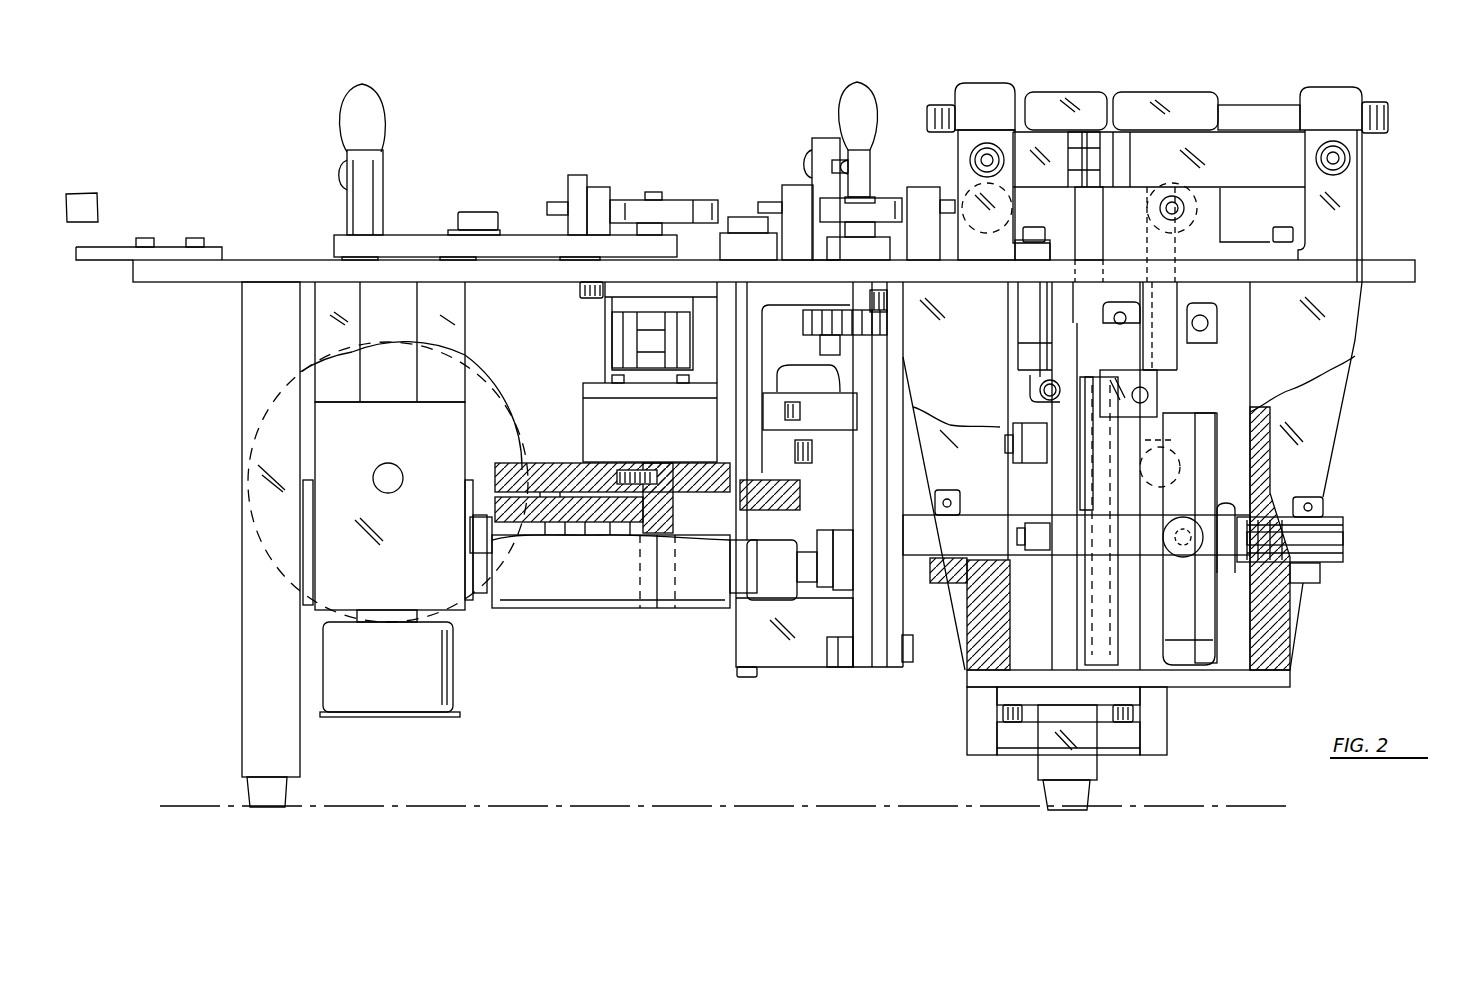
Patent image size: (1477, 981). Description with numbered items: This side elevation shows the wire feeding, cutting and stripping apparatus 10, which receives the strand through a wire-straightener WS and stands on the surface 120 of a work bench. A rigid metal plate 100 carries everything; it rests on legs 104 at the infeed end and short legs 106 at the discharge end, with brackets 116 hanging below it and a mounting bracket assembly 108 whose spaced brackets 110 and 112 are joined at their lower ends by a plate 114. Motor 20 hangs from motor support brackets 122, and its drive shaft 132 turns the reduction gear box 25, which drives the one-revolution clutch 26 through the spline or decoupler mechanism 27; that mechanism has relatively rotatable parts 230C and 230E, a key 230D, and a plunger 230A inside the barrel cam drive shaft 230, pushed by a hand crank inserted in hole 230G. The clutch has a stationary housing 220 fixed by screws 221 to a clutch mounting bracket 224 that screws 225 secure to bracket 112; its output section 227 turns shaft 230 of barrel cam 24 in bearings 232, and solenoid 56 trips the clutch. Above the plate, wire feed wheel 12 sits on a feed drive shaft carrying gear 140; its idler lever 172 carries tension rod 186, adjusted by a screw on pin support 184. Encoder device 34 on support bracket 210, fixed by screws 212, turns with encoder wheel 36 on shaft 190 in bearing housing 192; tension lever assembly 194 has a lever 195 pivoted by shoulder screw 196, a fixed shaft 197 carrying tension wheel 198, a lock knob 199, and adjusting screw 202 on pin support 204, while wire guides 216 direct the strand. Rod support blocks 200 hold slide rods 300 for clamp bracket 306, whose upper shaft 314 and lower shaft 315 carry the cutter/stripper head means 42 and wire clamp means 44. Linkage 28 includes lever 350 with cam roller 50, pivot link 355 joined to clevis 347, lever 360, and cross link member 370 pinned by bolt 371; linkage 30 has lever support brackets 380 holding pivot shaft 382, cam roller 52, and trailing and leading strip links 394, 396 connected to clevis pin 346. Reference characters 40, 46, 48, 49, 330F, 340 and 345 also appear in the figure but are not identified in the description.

The apparatus 10 is at (218, 140).
The wire-straightener WS is at (98, 200).
The rigid metal plate 100 is at (272, 260).
The legs 104 is at (242, 727).
The short legs 106 is at (1097, 774).
The mounting bracket assembly 108 is at (1300, 640).
The bracket 110 is at (1333, 443).
The bracket 112 is at (950, 616).
The plate 114 is at (1290, 680).
The brackets 116 is at (967, 748).
The surface 120 is at (700, 806).
The motor support brackets 122 is at (466, 310).
The wire feed wheel 12 is at (881, 198).
The drive shaft 132 is at (400, 475).
The gear 140 is at (803, 322).
The lever 172 is at (721, 245).
The pin support 184 is at (820, 138).
The tension rod 186 is at (850, 84).
The drive shaft 190 is at (653, 192).
The bearing housing 192 is at (675, 330).
The tension lever assembly 194 is at (425, 235).
The lever 195 is at (398, 235).
The shoulder screw 196 is at (480, 212).
The fixed shaft 197 is at (662, 228).
The tension wheel 198 is at (668, 200).
The lever lock knob 199 is at (575, 175).
The motor 20 is at (476, 376).
The rod support blocks 200 is at (1358, 210).
The adjusting screw 202 is at (340, 168).
The pin support 204 is at (340, 194).
The support bracket 210 is at (605, 315).
The screws 212 is at (688, 383).
The wire guides 216 is at (598, 187).
The stationary housing 220 is at (865, 667).
The screws 221 is at (913, 650).
The clutch mounting bracket 224 is at (900, 672).
The screws 225 is at (868, 298).
The output section 227 is at (935, 558).
The drive shaft 230 is at (1343, 518).
The plunger 230A is at (1343, 540).
The rotatable part 230C is at (612, 608).
The key 230D is at (658, 608).
The rotatable part 230E is at (715, 608).
The hole 230G is at (1343, 528).
The bearings 232 is at (1300, 583).
The barrel cam 24 is at (1200, 687).
The reduction gear box 25 is at (472, 553).
The one-revolution clutch mechanism 26 is at (795, 600).
The spline mechanism 27 is at (540, 622).
The linkage 28 is at (1045, 478).
The linkage 30 is at (1178, 362).
The slide rods 300 is at (985, 155).
The clamp bracket 306 is at (1247, 105).
The upper shaft 314 is at (1287, 105).
The lower shaft 315 is at (1258, 230).
The bearing housing 330F is at (602, 465).
The encoder device 34 is at (583, 403).
The pivot pin 340 is at (1200, 206).
The lug 345 is at (1220, 305).
The clevis pin 346 is at (1222, 320).
The clevis 347 is at (1125, 146).
The vertical lever 350 is at (1103, 248).
The pivot link 355 is at (1100, 172).
The measuring wheel 36 is at (705, 200).
The vertical lever 360 is at (1050, 597).
The cross link member 370 is at (1020, 428).
The pivot pin 371 is at (1022, 538).
The lever support brackets 380 is at (1160, 385).
The pivot shaft 382 is at (1182, 450).
The trailing strip link 394 is at (1102, 443).
The leading strip link 396 is at (1148, 275).
The clamp block 40 is at (985, 83).
The movable cutter/stripper head means 42 is at (1060, 92).
The movable wire clamp means 44 is at (1160, 92).
The link arm 46 is at (1085, 640).
The cam arm 48 is at (1195, 413).
The arm block 49 is at (1200, 640).
The cam roller 50 is at (1085, 568).
The cam roller 52 is at (1183, 557).
The solenoid 56 is at (797, 367).